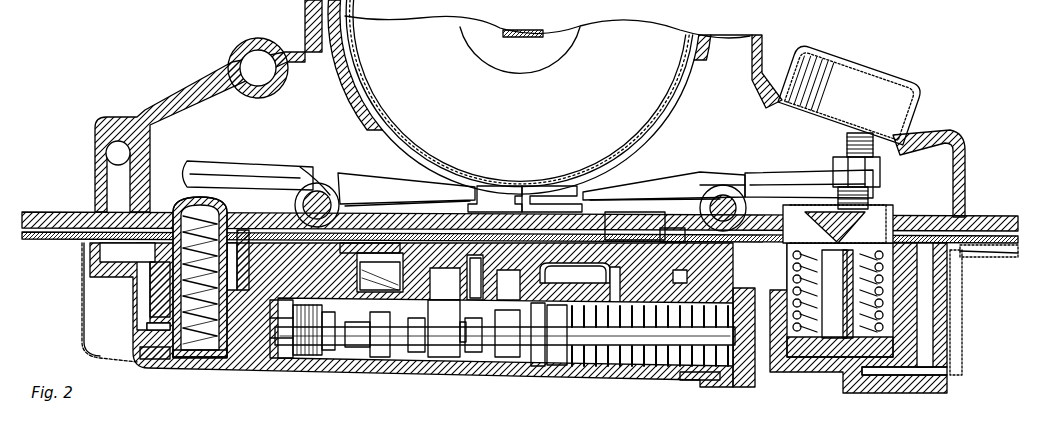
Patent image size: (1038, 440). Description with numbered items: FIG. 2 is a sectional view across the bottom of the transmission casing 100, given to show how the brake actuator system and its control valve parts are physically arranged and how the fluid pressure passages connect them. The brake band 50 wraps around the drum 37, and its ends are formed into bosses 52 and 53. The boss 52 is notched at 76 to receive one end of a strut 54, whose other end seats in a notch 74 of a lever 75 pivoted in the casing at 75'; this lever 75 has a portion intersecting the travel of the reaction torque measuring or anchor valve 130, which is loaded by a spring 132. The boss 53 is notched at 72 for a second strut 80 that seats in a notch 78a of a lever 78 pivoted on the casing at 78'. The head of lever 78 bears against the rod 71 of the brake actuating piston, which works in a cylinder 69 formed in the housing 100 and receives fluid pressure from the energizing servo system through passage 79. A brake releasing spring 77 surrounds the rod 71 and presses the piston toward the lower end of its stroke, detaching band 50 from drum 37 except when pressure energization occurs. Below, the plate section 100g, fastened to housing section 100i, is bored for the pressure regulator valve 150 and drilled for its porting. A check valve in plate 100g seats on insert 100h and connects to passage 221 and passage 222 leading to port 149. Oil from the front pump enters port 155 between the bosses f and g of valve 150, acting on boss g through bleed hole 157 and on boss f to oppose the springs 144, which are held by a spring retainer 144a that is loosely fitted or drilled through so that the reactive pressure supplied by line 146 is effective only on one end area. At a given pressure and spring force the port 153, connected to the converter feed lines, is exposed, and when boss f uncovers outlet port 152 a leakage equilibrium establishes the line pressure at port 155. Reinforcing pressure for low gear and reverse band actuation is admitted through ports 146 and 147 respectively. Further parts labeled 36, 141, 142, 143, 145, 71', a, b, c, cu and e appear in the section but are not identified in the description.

The housing 100 is at (200, 106).
The fuel level 36 is at (615, 46).
The drum 37 is at (695, 70).
The brake band 50 is at (690, 102).
The lever 75 is at (555, 166).
The lever pivot 75' is at (317, 176).
The notch of lever 74 is at (338, 178).
The strut 54 is at (398, 186).
The notch of boss 76 is at (445, 199).
The boss 52 is at (503, 188).
The boss 53 is at (552, 188).
The notch of end 72 is at (600, 190).
The strut 80 is at (678, 180).
The notch of lever 78a is at (706, 178).
The lever pivot 78' is at (731, 186).
The lever 78 is at (809, 162).
The release spring 77 is at (890, 214).
The reaction torque measuring valve 130 is at (183, 200).
The spring 132 is at (178, 360).
The spring seat 142 is at (236, 360).
The stem 141 is at (243, 230).
The chamber a is at (150, 252).
The passage b is at (165, 286).
The passage 143 is at (160, 326).
The passage c is at (175, 354).
The cup cu is at (386, 292).
The passage 222 is at (475, 290).
The passage 221 is at (393, 240).
The pressure regulator valve 150 is at (441, 325).
The port e is at (460, 336).
The spring retainer 144a is at (598, 284).
The line 146 is at (626, 236).
The insert 100h is at (668, 236).
The housing section 100i is at (281, 360).
The boss g is at (300, 362).
The bleed hole 157 is at (330, 356).
The port 155 is at (380, 358).
The boss f is at (384, 360).
The port 153 is at (416, 354).
The outlet port 152 is at (470, 356).
The port 149 is at (504, 358).
The port 147 is at (540, 368).
The spring retainer 145 is at (580, 366).
The springs 144 is at (656, 368).
The plate section 100g is at (695, 362).
The cylinder 69 is at (893, 266).
The rod 71 is at (840, 284).
The valve spring 71' is at (835, 291).
The passage 79 is at (925, 376).